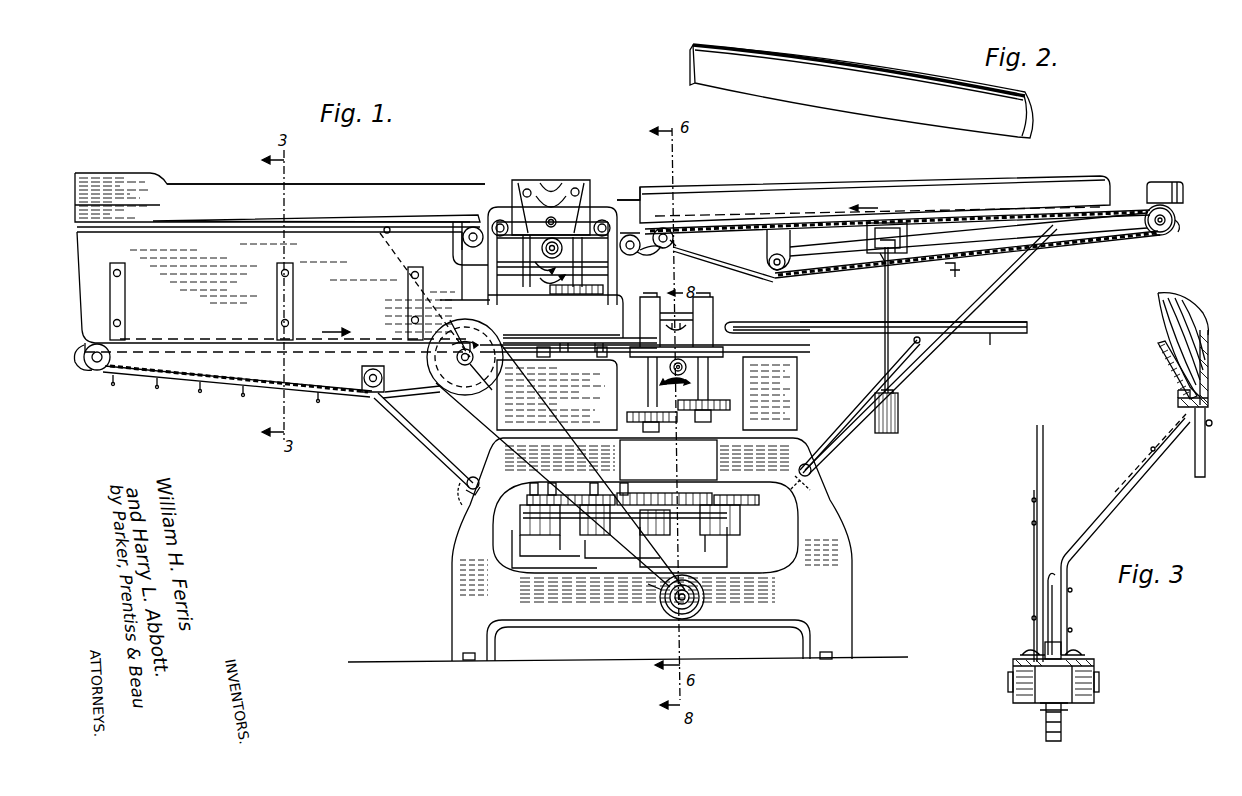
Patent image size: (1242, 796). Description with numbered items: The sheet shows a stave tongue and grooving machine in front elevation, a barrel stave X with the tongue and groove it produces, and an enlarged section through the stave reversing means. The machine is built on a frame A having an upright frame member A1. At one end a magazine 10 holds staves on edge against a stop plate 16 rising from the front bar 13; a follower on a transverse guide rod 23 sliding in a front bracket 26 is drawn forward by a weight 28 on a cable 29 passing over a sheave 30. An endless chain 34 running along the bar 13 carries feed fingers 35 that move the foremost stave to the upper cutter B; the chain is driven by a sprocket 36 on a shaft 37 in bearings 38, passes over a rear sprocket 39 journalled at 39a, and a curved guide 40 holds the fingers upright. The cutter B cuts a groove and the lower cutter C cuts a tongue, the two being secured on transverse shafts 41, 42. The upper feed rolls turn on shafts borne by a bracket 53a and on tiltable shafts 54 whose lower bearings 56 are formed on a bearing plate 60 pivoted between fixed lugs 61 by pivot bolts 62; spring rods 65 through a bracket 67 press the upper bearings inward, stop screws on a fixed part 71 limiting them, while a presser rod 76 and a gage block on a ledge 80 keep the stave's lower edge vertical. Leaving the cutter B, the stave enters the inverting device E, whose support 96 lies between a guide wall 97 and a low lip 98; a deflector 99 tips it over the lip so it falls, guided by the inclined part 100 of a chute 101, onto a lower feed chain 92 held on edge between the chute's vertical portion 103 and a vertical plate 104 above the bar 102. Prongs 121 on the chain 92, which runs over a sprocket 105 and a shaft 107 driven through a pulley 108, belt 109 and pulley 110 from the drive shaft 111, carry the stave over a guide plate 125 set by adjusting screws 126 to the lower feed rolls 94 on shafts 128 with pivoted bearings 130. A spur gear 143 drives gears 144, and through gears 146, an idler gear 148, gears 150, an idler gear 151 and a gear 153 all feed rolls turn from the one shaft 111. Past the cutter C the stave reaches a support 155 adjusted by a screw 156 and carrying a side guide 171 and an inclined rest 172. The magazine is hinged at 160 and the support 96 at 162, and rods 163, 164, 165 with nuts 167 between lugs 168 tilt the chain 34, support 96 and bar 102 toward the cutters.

In FIG. 1, the magazine 10 is at (863, 190).
In FIG. 1, the longitudinal front bar 13 is at (830, 230).
In FIG. 1, the longitudinal stop plate 16 is at (877, 204).
In FIG. 1, the horizontal guide rod 23 is at (910, 235).
In FIG. 1, the front bracket 26 is at (880, 258).
In FIG. 1, the weight 28 is at (898, 408).
In FIG. 1, the cable 29 is at (889, 298).
In FIG. 1, the sheave 30 is at (900, 248).
In FIG. 1, the endless chain 34 is at (1082, 240).
In FIG. 1, the feed fingers 35 is at (958, 272).
In FIG. 1, the sprocket 36 is at (674, 243).
In FIG. 1, the shaft 37 is at (670, 250).
In FIG. 1, the bearings 38 is at (655, 255).
In FIG. 1, the sprocket 39 is at (1152, 235).
In FIG. 1, the journal 39a is at (1178, 230).
In FIG. 1, the curved plate or guide 40 is at (1173, 182).
In FIG. 1, the transverse horizontal shaft 41 is at (542, 248).
In FIG. 1, the transverse horizontal shaft 42 is at (670, 368).
In FIG. 1, the bracket 53a is at (490, 210).
In FIG. 1, the shafts 54 is at (547, 283).
In FIG. 1, the lower bearings 56 is at (522, 515).
In FIG. 1, the bearing plate 60 is at (565, 545).
In FIG. 1, the fixed lugs 61 is at (575, 548).
In FIG. 1, the pivot stud or bolt 62 is at (620, 545).
In FIG. 1, the horizontal rods 65 is at (547, 185).
In FIG. 1, the bracket 67 is at (580, 251).
In FIG. 1, the fixed part of frame member 71 is at (512, 183).
In FIG. 1, the presser rod 76 is at (527, 250).
In FIG. 1, the ledge 80 is at (556, 222).
In FIG. 1, the lower feed chain 92 is at (250, 385).
In FIG. 3, the lower feed chain 92 is at (1035, 648).
In FIG. 1, the lower feed rolls 94 is at (727, 323).
In FIG. 1, the stave support 96 is at (443, 223).
In FIG. 1, the upright side guide wall 97 is at (280, 196).
In FIG. 3, the upright side guide wall 97 is at (1220, 404).
In FIG. 1, the edge or lip 98 is at (347, 218).
In FIG. 3, the edge or lip 98 is at (1178, 403).
In FIG. 1, the deflector or cam 99 is at (120, 190).
In FIG. 3, the deflector or cam 99 is at (1163, 322).
In FIG. 3, the downwardly inclined part 100 is at (1150, 476).
In FIG. 3, the plate or chute 101 is at (1125, 536).
In FIG. 1, the bar or support 102 is at (307, 337).
In FIG. 3, the bar or support 102 is at (1013, 668).
In FIG. 3, the lower vertical portion 103 is at (1066, 616).
In FIG. 1, the vertical plate 104 is at (266, 301).
In FIG. 3, the vertical plate 104 is at (1036, 476).
In FIG. 1, the sprocket 105 is at (110, 370).
In FIG. 3, the sprocket 105 is at (1064, 712).
In FIG. 1, the shaft 107 is at (458, 372).
In FIG. 1, the pulley 108 is at (462, 320).
In FIG. 1, the belt 109 is at (553, 405).
In FIG. 1, the pulley 110 is at (672, 608).
In FIG. 1, the drive shaft 111 is at (704, 600).
In FIG. 1, the feed fingers or sharp edged prongs 121 is at (370, 393).
In FIG. 3, the feed fingers or sharp edged prongs 121 is at (1062, 645).
In FIG. 1, the adjustable support or guide plate 125 is at (567, 337).
In FIG. 1, the adjusting screws 126 is at (552, 347).
In FIG. 1, the shafts 128 is at (700, 385).
In FIG. 1, the pivoted lower bearings 130 is at (735, 518).
In FIG. 1, the spur gear 143 is at (680, 493).
In FIG. 1, the gears 144 is at (740, 493).
In FIG. 1, the gears 146 is at (760, 414).
In FIG. 1, the idler gear 148 is at (605, 490).
In FIG. 1, the gear 150 is at (520, 483).
In FIG. 1, the idler gear 151 is at (545, 490).
In FIG. 1, the gear 153 is at (587, 275).
In FIG. 1, the support 155 is at (1008, 347).
In FIG. 1, the adjusting screw 156 is at (790, 343).
In FIG. 1, the hinge connection 160 is at (640, 245).
In FIG. 1, the hinge 162 is at (473, 227).
In FIG. 1, the adjusting rod or link 163 is at (1020, 268).
In FIG. 1, the adjusting rod or link 164 is at (405, 268).
In FIG. 3, the adjusting rod or link 164 is at (1206, 453).
In FIG. 1, the adjusting rod or link 165 is at (412, 432).
In FIG. 1, the adjusting nut 167 is at (830, 490).
In FIG. 1, the lugs 168 is at (810, 462).
In FIG. 1, the upright side guide 171 is at (935, 318).
In FIG. 1, the plate or rest 172 is at (1027, 325).
In FIG. 1, the frame A is at (660, 549).
In FIG. 1, the upright frame member A1 is at (808, 512).
In FIG. 1, the upper cutter B is at (573, 240).
In FIG. 1, the lower cutter C is at (690, 357).
In FIG. 3, the stave inverting device E is at (1109, 372).
In FIG. 2, the stave X is at (861, 91).